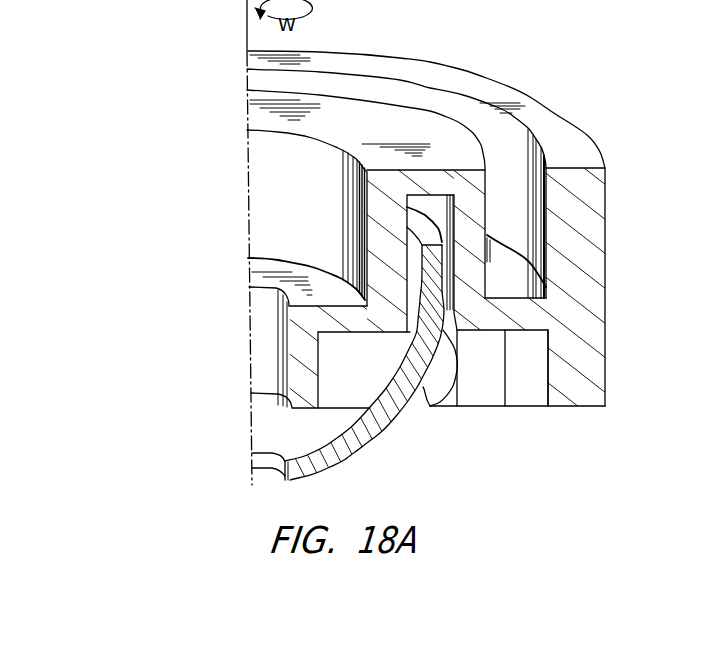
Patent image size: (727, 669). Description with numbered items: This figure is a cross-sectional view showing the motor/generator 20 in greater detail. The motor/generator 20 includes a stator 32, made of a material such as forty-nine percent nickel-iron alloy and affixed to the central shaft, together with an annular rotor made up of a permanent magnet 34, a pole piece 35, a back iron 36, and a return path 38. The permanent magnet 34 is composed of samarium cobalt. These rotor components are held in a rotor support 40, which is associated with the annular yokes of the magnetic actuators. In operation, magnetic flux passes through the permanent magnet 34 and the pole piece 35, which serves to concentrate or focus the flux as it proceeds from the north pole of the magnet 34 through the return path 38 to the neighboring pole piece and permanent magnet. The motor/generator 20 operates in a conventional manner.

The motor/generator 20 is at (121, 319).
The stator 32 is at (352, 444).
The permanent magnet 34 is at (480, 398).
The pole piece 35 is at (440, 402).
The back iron 36 is at (530, 397).
The return path 38 is at (333, 392).
The rotor support 40 is at (583, 313).